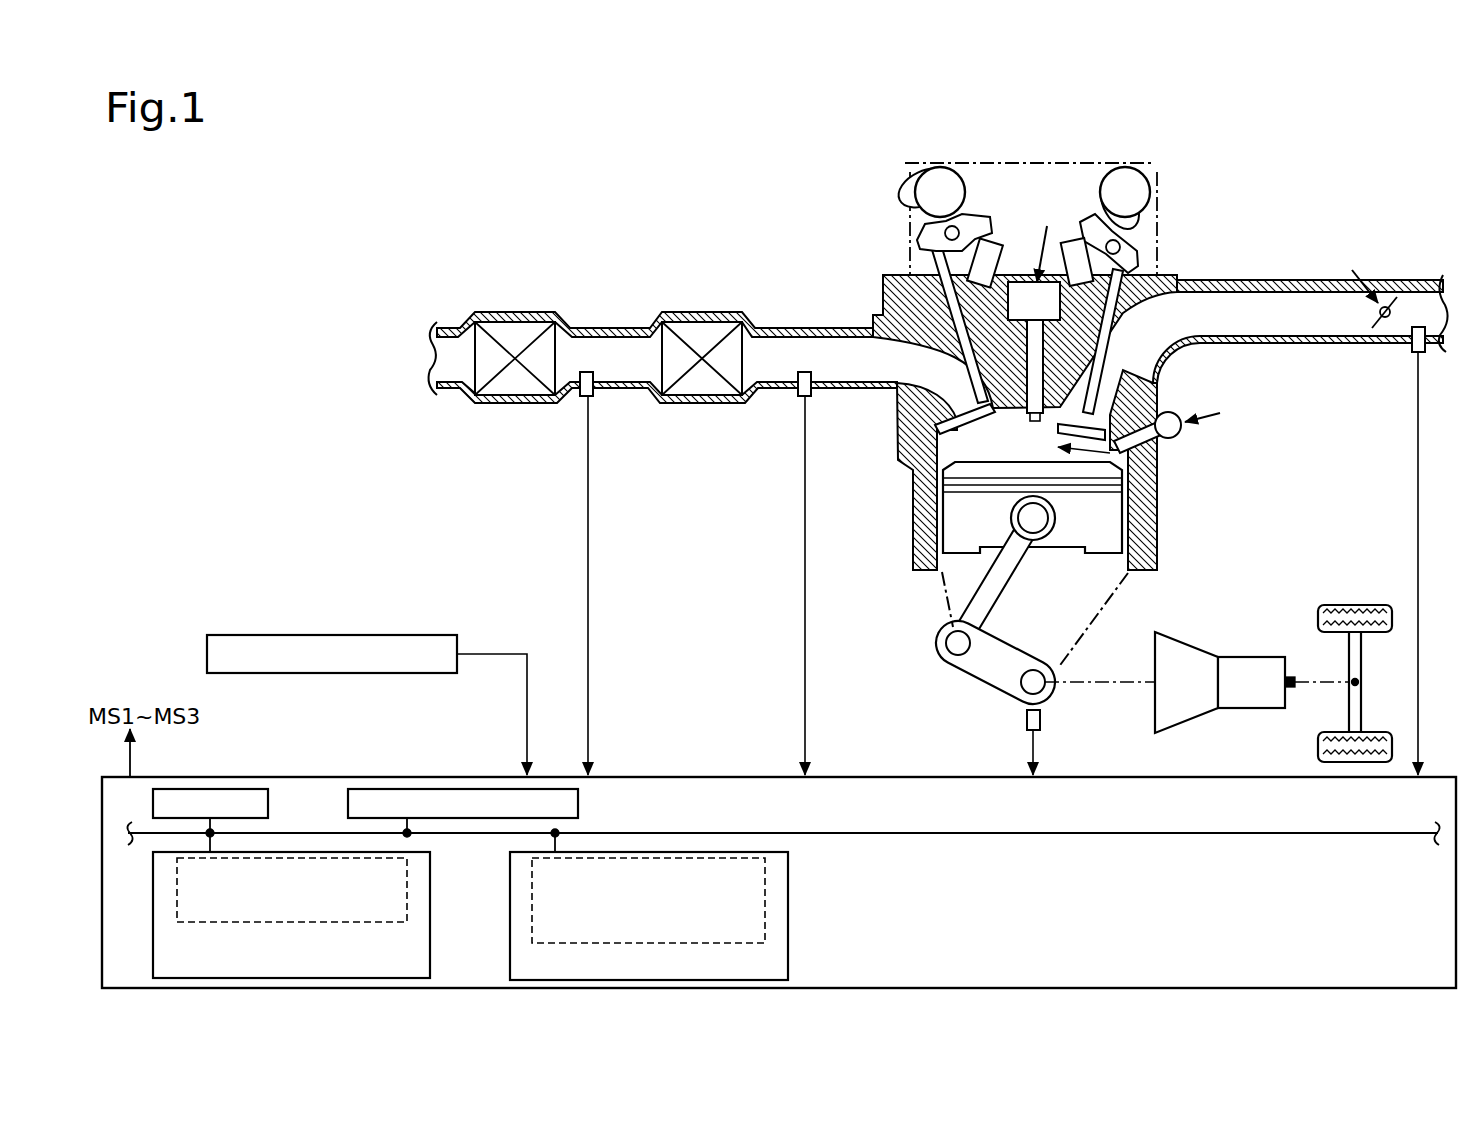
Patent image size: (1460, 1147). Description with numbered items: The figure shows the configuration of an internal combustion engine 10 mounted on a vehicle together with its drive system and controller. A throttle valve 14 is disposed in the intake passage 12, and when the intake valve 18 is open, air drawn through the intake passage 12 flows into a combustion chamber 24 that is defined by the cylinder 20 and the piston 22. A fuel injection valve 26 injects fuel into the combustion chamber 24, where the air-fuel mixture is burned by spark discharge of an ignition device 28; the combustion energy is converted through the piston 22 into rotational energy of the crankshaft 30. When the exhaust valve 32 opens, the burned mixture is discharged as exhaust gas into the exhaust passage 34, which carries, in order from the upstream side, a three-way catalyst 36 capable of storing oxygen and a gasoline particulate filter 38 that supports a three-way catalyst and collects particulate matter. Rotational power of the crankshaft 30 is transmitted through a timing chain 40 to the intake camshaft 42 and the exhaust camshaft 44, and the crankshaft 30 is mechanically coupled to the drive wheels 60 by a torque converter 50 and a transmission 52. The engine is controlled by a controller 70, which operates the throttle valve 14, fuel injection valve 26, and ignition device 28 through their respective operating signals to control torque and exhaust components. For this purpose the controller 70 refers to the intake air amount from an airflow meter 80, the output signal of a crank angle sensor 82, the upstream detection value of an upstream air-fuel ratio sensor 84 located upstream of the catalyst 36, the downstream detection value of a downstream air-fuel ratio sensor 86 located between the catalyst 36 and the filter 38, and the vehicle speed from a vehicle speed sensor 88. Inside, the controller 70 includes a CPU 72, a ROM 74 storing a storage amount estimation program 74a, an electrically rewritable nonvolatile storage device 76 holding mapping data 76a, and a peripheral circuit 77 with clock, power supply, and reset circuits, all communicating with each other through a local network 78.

The internal combustion engine 10 is at (1368, 123).
The intake passage 12 is at (1338, 340).
The throttle valve 14 is at (1394, 330).
The intake valve 18 is at (1125, 382).
The cylinder 20 is at (1157, 497).
The piston 22 is at (1115, 520).
The combustion chamber 24 is at (1140, 466).
The fuel injection valve 26 is at (1185, 435).
The ignition device 28 is at (1020, 286).
The crankshaft 30 is at (1033, 672).
The exhaust valve 32 is at (958, 368).
The exhaust passage 34 is at (858, 376).
The catalyst 36 is at (706, 330).
The gasoline particulate filter 38 is at (518, 330).
The timing chain 40 is at (1128, 592).
The intake camshaft 42 is at (1120, 175).
The exhaust camshaft 44 is at (950, 180).
The torque converter 50 is at (1182, 715).
The transmission 52 is at (1255, 708).
The drive wheels 60 is at (1365, 605).
The controller 70 is at (890, 776).
The CPU 72 is at (270, 804).
The ROM 74 is at (326, 911).
The storage amount estimation program 74a is at (407, 900).
The storage device 76 is at (689, 916).
The mapping data 76a is at (765, 910).
The peripheral circuit 77 is at (580, 804).
The local network 78 is at (1047, 833).
The airflow meter 80 is at (1425, 352).
The crank angle sensor 82 is at (1027, 720).
The upstream air-fuel ratio sensor 84 is at (808, 402).
The downstream air-fuel ratio sensor 86 is at (586, 402).
The vehicle speed sensor 88 is at (207, 655).